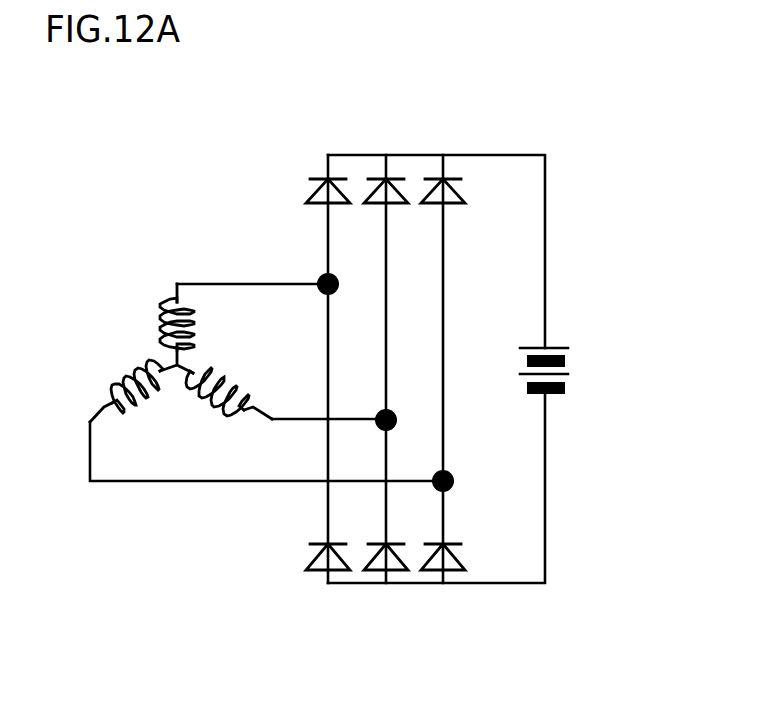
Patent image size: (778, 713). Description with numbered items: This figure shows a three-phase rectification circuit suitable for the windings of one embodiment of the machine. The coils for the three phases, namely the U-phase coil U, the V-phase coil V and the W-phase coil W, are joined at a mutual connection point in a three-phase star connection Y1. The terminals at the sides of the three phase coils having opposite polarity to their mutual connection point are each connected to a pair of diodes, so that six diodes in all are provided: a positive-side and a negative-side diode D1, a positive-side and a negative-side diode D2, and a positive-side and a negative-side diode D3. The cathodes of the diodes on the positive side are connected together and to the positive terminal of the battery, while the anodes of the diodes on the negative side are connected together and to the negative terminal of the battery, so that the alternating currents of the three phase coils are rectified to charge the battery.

The three-phase star connection Y1 is at (143, 345).
The U-phase coil U is at (193, 324).
The V-phase coil V is at (220, 382).
The W-phase coil W is at (127, 383).
The diode D1 is at (358, 143).
The diode D2 is at (419, 143).
The diode D3 is at (481, 143).